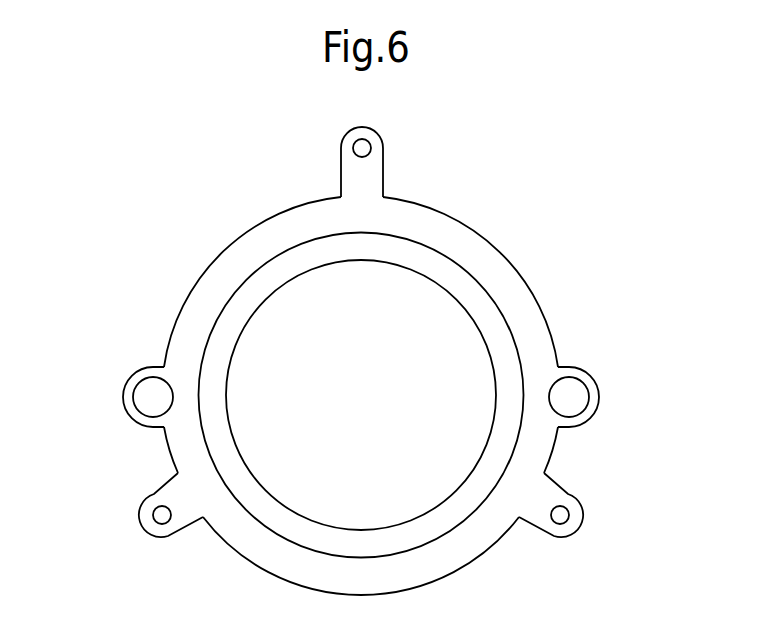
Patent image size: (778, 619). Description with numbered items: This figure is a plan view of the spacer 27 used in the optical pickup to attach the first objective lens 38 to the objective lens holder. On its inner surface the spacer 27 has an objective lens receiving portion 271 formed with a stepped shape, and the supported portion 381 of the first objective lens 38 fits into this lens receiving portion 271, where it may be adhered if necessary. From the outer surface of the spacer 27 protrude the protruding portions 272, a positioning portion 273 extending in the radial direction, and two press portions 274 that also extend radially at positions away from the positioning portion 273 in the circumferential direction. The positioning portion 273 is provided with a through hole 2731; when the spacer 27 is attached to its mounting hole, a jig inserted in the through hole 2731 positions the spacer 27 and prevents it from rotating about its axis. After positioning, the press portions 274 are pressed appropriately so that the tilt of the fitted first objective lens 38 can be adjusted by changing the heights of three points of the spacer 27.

The spacer 27 is at (508, 275).
The objective lens receiving portion 271 is at (237, 305).
The protruding portions 272 is at (145, 395).
The positioning portion 273 is at (375, 163).
The through hole 2731 is at (353, 148).
The press portions 274 is at (158, 497).
The first objective lens 38 is at (422, 394).
The supported portion 381 is at (490, 315).